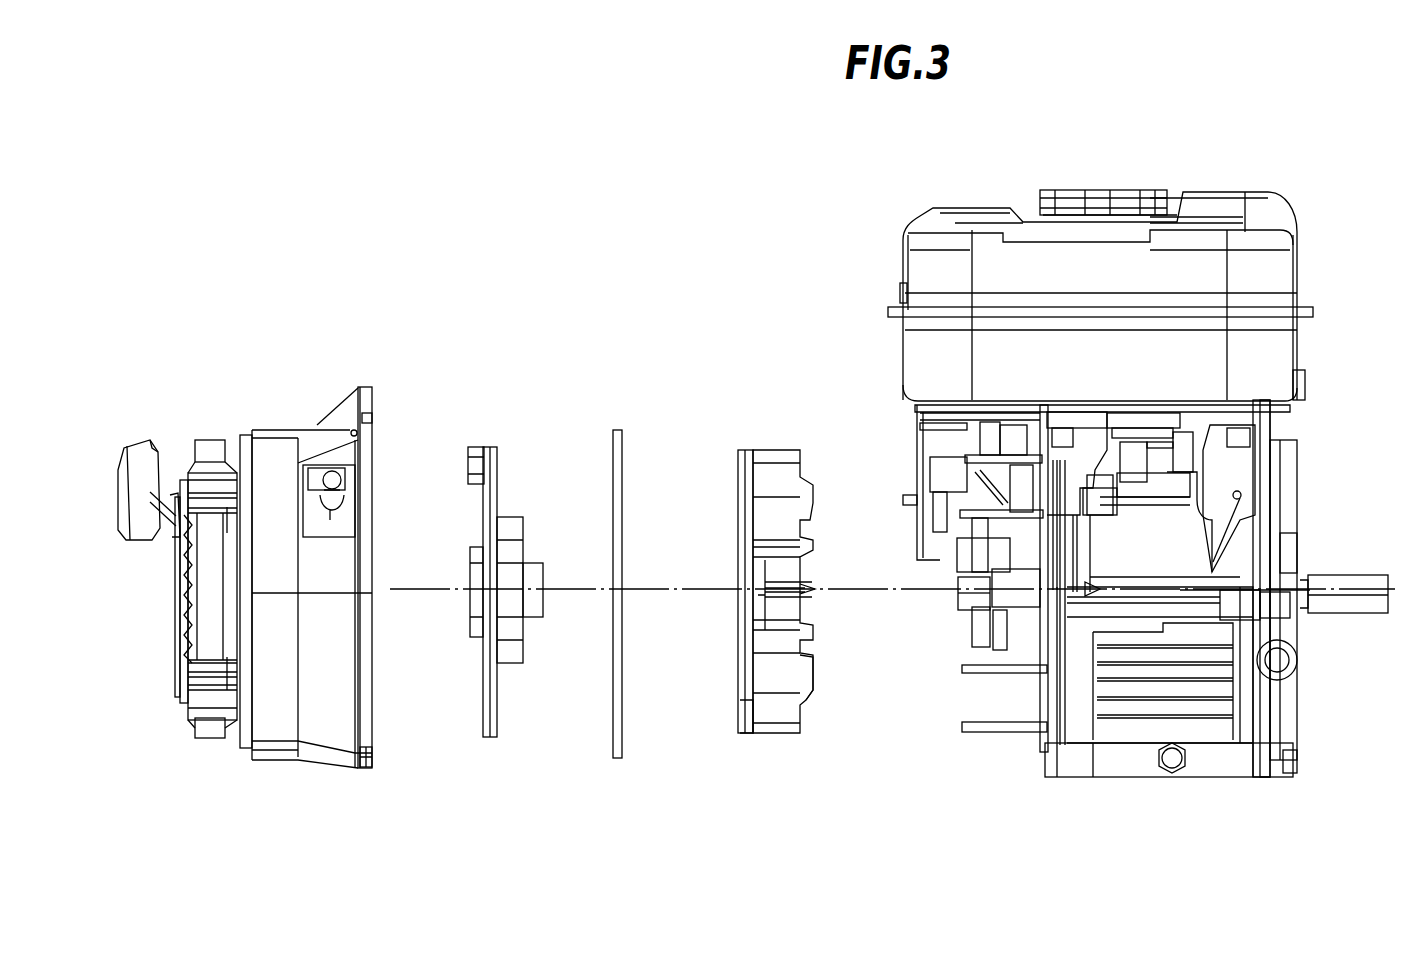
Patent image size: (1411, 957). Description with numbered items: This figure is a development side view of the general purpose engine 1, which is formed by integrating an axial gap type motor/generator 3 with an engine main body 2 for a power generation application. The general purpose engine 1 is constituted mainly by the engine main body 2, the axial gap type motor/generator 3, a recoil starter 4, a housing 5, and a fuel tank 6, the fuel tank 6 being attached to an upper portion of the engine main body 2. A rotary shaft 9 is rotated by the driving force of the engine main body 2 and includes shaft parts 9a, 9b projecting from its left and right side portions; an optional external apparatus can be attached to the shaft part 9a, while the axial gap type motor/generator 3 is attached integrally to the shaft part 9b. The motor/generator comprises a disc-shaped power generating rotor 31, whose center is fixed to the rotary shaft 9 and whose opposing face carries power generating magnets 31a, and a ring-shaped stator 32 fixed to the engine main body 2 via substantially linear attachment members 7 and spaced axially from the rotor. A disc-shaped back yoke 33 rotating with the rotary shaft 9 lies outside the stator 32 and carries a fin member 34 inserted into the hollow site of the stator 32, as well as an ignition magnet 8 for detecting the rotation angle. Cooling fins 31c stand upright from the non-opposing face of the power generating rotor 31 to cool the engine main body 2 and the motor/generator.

The general purpose engine 1 is at (190, 178).
The engine main body 2 is at (1117, 782).
The axial gap type motor/generator 3 is at (588, 205).
The recoil starter 4 is at (214, 440).
The housing 5 is at (299, 430).
The fuel tank 6 is at (912, 232).
The attachment members 7 is at (977, 733).
The ignition magnet 8 is at (467, 466).
The rotary shaft 9 is at (1351, 570).
The shaft part 9a is at (1390, 620).
The shaft part 9b is at (975, 598).
The power generating rotor 31 is at (775, 446).
The power generating magnets 31a is at (737, 709).
The cooling fins 31c is at (798, 730).
The stator 32 is at (614, 428).
The back yoke 33 is at (491, 442).
The fin member 34 is at (521, 636).